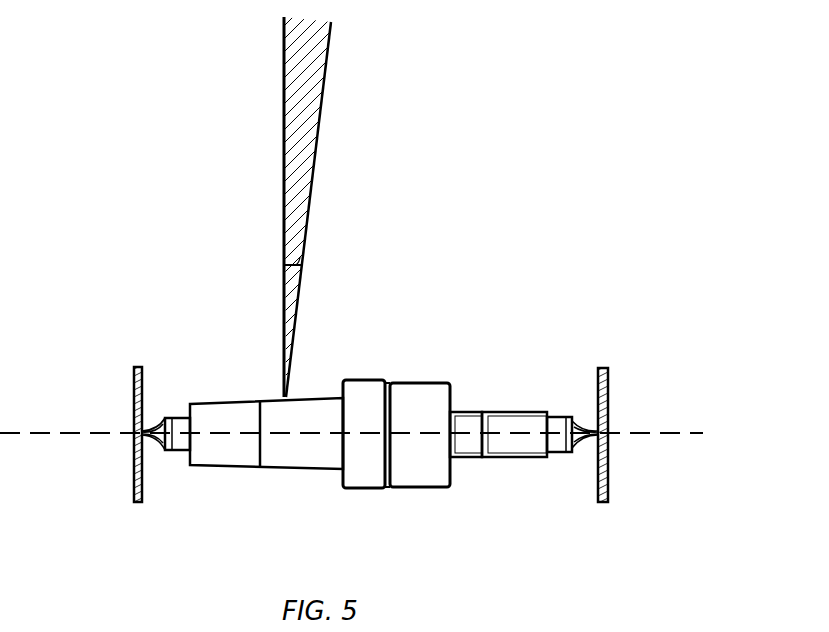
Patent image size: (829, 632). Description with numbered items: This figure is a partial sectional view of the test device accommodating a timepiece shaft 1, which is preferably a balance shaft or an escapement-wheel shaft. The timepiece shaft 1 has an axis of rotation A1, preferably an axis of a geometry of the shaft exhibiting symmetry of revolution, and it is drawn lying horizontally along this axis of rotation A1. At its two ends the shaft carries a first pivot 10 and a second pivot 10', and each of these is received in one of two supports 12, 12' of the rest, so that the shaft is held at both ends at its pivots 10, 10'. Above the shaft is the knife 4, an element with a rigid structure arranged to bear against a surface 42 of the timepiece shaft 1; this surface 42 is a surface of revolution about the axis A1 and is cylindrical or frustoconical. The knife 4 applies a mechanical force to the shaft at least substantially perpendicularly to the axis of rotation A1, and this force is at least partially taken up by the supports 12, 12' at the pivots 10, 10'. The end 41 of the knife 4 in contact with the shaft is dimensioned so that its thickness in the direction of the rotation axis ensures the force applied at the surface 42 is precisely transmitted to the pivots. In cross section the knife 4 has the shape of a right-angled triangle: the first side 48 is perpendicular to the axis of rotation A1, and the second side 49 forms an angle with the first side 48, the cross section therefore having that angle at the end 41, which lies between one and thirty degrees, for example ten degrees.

The timepiece shaft 1 is at (505, 423).
The knife 4 is at (284, 208).
The first pivot 10 is at (642, 391).
The second pivot 10' is at (110, 401).
The support 12 is at (665, 435).
The support 12' is at (89, 435).
The end of the knife 41 is at (283, 395).
The surface of the timepiece shaft 42 is at (229, 392).
The first side 48 is at (283, 183).
The second side 49 is at (318, 137).
The axis of rotation A1 is at (650, 433).